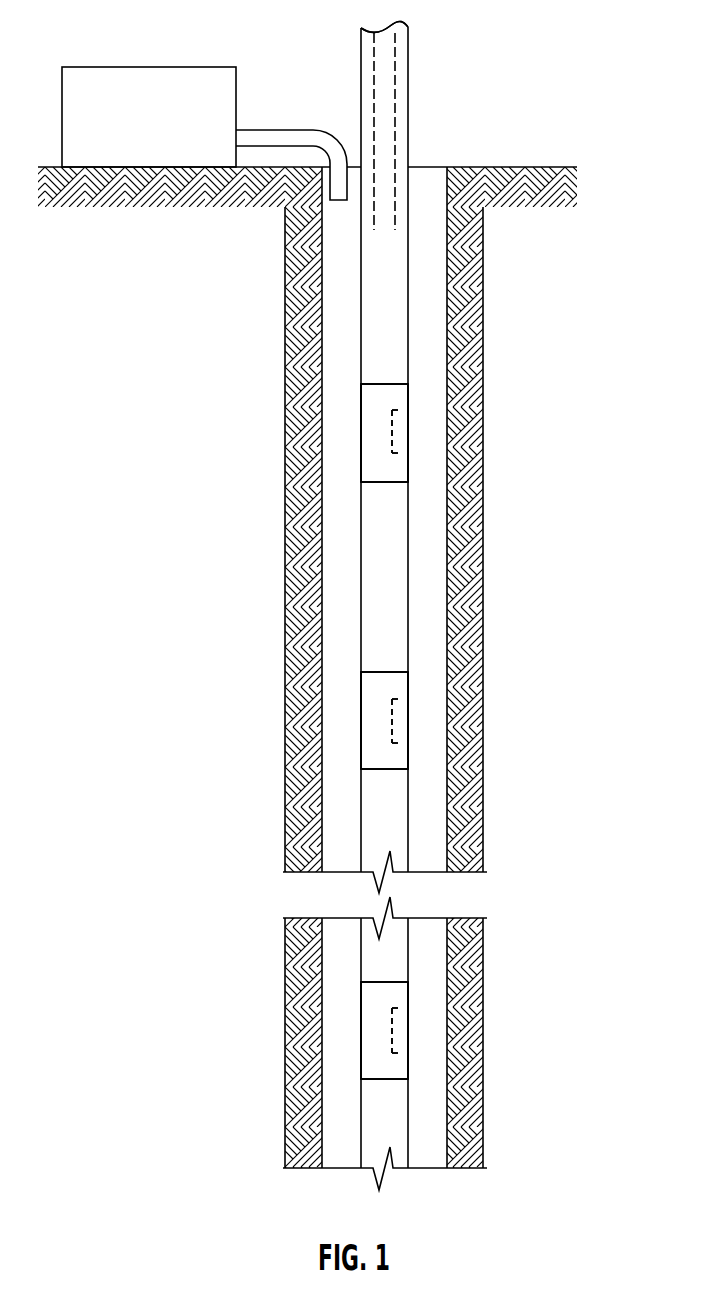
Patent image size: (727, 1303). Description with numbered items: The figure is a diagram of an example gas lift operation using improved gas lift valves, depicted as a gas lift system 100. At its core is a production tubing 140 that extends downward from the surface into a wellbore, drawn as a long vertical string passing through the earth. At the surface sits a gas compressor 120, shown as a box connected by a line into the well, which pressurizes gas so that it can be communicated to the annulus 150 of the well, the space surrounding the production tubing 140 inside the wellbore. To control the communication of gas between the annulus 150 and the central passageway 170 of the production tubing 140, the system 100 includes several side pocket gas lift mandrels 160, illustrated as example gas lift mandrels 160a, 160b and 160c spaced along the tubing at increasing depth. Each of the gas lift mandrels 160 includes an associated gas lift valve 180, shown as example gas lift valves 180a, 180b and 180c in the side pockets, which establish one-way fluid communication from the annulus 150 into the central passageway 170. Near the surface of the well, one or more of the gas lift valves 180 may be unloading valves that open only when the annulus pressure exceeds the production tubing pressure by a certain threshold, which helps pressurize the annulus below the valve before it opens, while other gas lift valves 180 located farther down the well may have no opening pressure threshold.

The gas lift system 100 is at (434, 38).
The gas compressor 120 is at (120, 67).
The production tubing 140 is at (408, 116).
The annulus 150 is at (434, 312).
The side pocket gas lift mandrel 160 is at (408, 404).
The gas lift mandrel 160a is at (361, 440).
The gas lift mandrel 160b is at (361, 721).
The gas lift mandrel 160c is at (361, 1042).
The central passageway 170 is at (378, 119).
The gas lift valve 180 is at (400, 443).
The gas lift valve 180a is at (400, 453).
The gas lift valve 180b is at (400, 743).
The gas lift valve 180c is at (400, 1053).